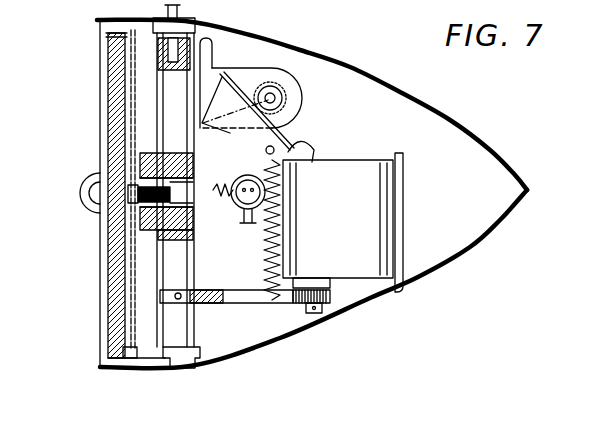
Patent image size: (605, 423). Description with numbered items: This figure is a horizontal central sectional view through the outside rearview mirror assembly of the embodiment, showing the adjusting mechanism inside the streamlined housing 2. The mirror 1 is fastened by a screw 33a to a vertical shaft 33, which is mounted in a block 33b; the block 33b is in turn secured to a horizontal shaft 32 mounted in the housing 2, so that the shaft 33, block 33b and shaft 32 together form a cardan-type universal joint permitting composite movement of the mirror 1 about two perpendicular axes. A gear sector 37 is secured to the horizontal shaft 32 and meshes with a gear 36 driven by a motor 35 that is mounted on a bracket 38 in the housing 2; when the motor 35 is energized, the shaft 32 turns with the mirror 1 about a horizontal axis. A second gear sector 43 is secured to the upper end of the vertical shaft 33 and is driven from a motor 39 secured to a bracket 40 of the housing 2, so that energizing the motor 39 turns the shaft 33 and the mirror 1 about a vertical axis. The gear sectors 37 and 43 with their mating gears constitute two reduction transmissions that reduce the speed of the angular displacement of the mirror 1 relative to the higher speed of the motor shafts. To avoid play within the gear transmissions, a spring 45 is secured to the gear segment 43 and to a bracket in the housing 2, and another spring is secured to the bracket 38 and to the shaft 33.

The mirror 1 is at (110, 48).
The streamlined housing 2 is at (513, 210).
The horizontal shaft 32 is at (175, 84).
The vertical shaft 33 is at (145, 210).
The screw 33a is at (133, 192).
The block 33b is at (133, 180).
The motor 35 is at (370, 250).
The gear 36 is at (335, 293).
The gear sector 37 is at (259, 298).
The bracket 38 is at (403, 227).
The motor 39 is at (243, 72).
The bracket 40 is at (195, 104).
The gear sector 43 is at (293, 148).
The spring 45 is at (263, 262).